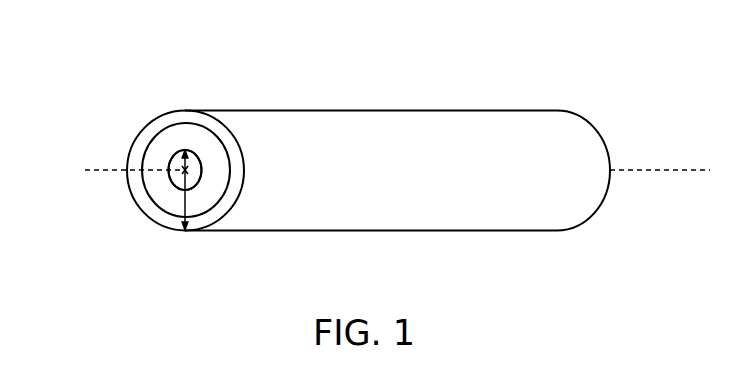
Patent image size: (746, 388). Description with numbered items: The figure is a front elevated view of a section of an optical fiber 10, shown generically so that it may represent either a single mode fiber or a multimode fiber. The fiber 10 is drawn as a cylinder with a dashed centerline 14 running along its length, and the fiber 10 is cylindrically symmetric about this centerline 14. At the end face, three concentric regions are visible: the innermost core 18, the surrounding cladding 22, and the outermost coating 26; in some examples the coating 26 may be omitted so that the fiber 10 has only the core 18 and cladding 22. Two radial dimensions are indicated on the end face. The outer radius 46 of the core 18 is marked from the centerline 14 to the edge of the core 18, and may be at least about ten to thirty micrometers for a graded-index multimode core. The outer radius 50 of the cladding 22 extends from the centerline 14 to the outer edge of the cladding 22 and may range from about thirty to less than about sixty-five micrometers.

The fiber 10 is at (67, 53).
The centerline 14 is at (647, 168).
The core 18 is at (172, 155).
The cladding 22 is at (152, 152).
The coating 26 is at (187, 115).
The outer radius 46 is at (201, 162).
The outer radius 50 is at (187, 202).